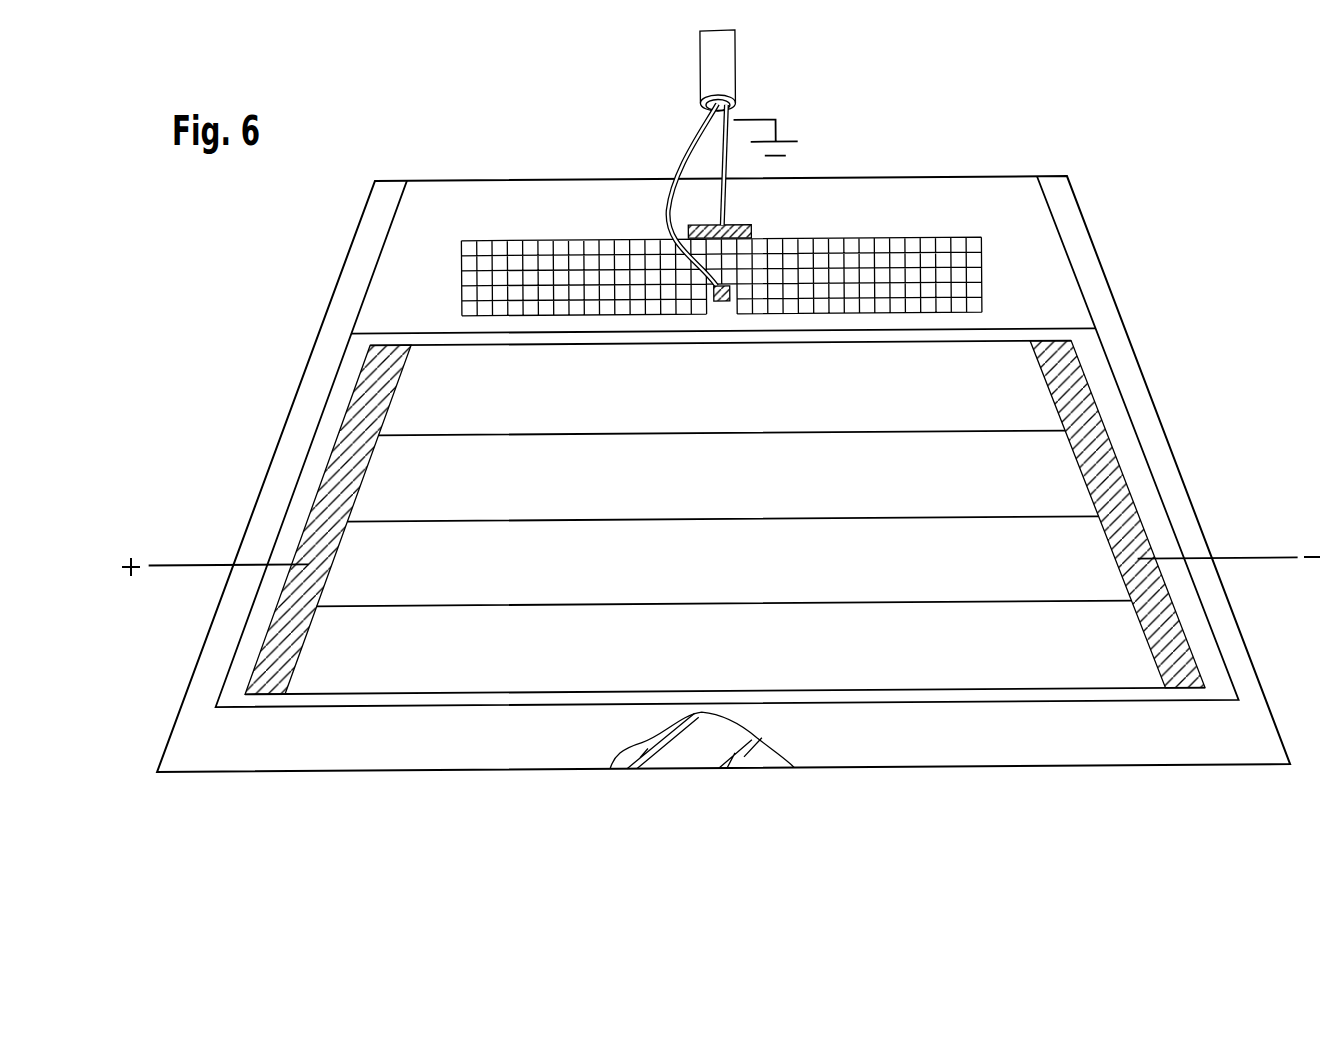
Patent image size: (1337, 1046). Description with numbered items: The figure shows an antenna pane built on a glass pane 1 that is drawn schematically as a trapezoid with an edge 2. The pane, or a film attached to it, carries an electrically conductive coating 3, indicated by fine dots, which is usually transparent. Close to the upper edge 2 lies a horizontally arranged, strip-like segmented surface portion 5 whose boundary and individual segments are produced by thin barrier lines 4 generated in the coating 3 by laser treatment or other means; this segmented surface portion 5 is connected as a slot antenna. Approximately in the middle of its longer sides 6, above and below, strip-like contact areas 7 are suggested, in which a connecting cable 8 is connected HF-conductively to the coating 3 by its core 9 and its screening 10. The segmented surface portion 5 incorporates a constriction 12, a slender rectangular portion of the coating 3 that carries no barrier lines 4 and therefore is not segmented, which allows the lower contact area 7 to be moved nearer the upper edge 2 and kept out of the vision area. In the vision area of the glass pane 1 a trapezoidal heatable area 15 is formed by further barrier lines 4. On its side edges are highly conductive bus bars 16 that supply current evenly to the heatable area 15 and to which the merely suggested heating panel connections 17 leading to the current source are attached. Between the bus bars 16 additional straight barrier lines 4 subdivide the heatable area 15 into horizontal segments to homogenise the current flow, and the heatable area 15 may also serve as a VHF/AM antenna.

The glass pane 1 is at (303, 797).
The edge 2 is at (1197, 767).
The electrically conductive coating 3 is at (548, 772).
The barrier lines 4 is at (907, 250).
The segmented surface portion 5 is at (534, 272).
The longer sides 6 is at (857, 305).
The contact areas 7 is at (705, 227).
The connecting cable 8 is at (725, 46).
The core 9 is at (707, 142).
The screening 10 is at (723, 178).
The constriction 12 is at (723, 310).
The heatable area 15 is at (535, 578).
The bus bars 16 is at (337, 495).
The heating panel connections 17 is at (176, 590).